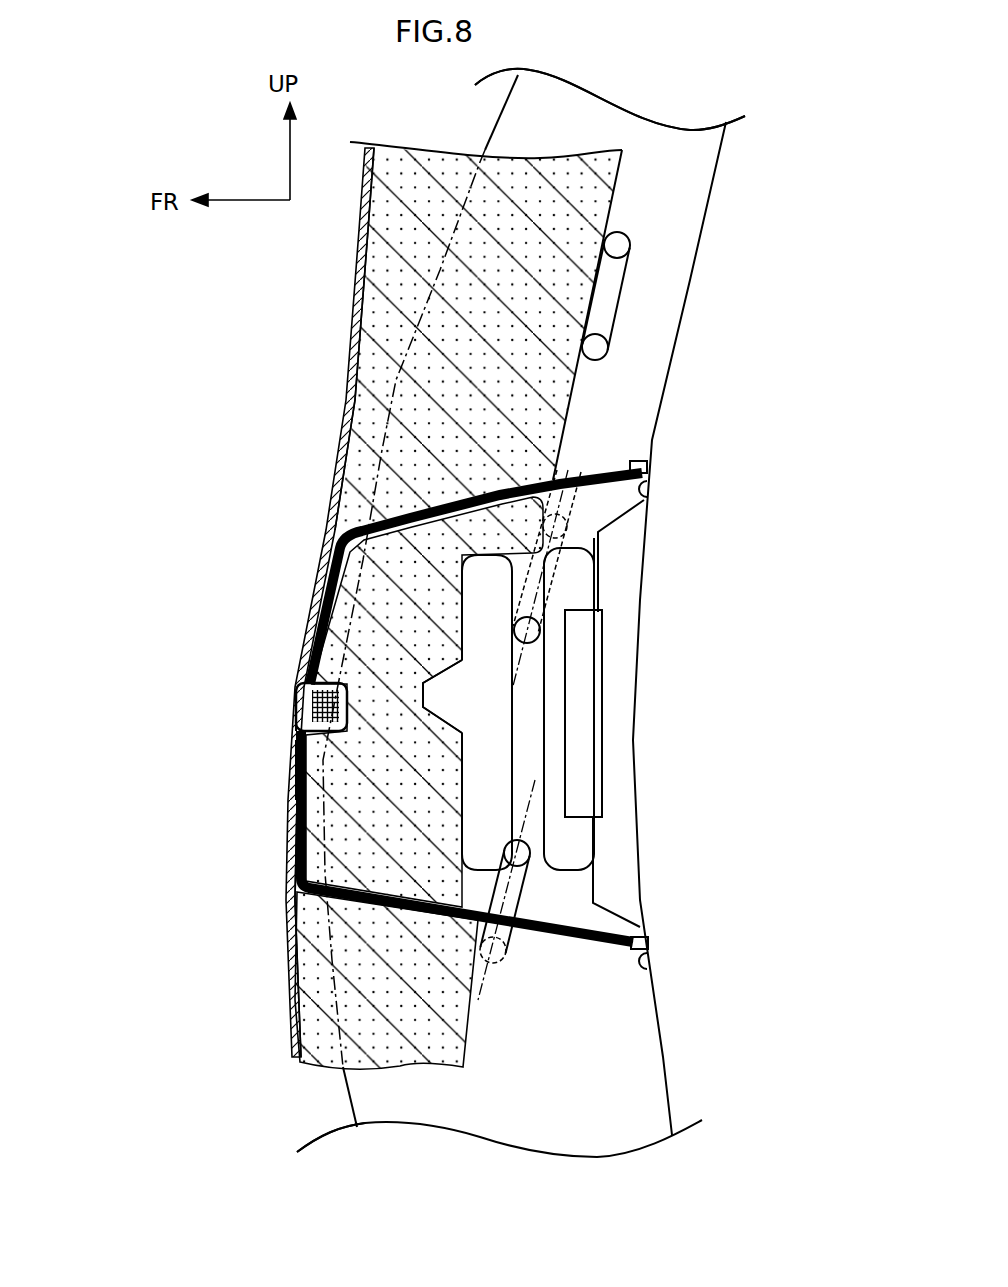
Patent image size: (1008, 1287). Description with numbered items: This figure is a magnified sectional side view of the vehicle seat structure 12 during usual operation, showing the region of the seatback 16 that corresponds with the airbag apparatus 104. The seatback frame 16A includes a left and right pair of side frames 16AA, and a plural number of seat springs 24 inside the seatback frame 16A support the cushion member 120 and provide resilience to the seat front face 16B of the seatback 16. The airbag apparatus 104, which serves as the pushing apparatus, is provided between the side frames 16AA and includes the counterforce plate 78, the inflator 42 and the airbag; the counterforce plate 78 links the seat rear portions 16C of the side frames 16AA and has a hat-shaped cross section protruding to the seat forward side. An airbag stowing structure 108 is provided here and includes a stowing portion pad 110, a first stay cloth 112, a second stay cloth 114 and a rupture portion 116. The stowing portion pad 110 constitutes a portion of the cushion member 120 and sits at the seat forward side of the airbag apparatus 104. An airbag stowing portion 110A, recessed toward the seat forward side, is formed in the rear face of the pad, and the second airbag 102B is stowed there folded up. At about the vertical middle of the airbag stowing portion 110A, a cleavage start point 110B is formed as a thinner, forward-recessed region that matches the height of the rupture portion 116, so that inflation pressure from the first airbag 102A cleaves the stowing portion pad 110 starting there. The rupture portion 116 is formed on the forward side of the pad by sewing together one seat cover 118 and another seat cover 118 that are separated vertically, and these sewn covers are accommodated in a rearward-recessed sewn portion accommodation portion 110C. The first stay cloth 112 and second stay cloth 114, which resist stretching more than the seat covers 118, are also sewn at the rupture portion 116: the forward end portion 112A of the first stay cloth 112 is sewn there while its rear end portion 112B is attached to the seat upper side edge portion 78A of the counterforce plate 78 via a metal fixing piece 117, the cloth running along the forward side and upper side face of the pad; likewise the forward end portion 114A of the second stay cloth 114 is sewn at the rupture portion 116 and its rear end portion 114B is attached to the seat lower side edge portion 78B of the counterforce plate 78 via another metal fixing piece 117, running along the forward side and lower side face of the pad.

The vehicle 12 is at (140, 1048).
The seatback 16 is at (313, 383).
The seatback frame 16A is at (610, 99).
The side frame 16AA is at (660, 300).
The seat front face 16B is at (358, 327).
The seat rear portion 16C is at (650, 372).
The seat spring 24 is at (627, 283).
The inflator 42 is at (588, 638).
The counterforce plate 78 is at (597, 892).
The seat upper side edge portion 78A is at (648, 490).
The seat lower side edge portion 78B is at (645, 965).
The first airbag 102A is at (600, 535).
The second airbag 102B is at (513, 733).
The airbag apparatus 104 is at (609, 453).
The airbag stowing structure 108 is at (477, 721).
The stowing portion pad 110 is at (338, 628).
The airbag stowing portion 110A is at (467, 803).
The cleavage start point 110B is at (467, 683).
The sewn portion accommodation portion 110C is at (292, 720).
The first stay cloth 112 is at (567, 487).
The end portion 112A is at (308, 684).
The end portion 112B is at (633, 452).
The second stay cloth 114 is at (567, 937).
The end portion 114A is at (300, 768).
The end portion 114B is at (622, 947).
The rupture portion 116 is at (300, 710).
The metal fixing piece 117 is at (650, 455).
The seat cover 118 is at (338, 533).
The cushion member 120 is at (358, 455).